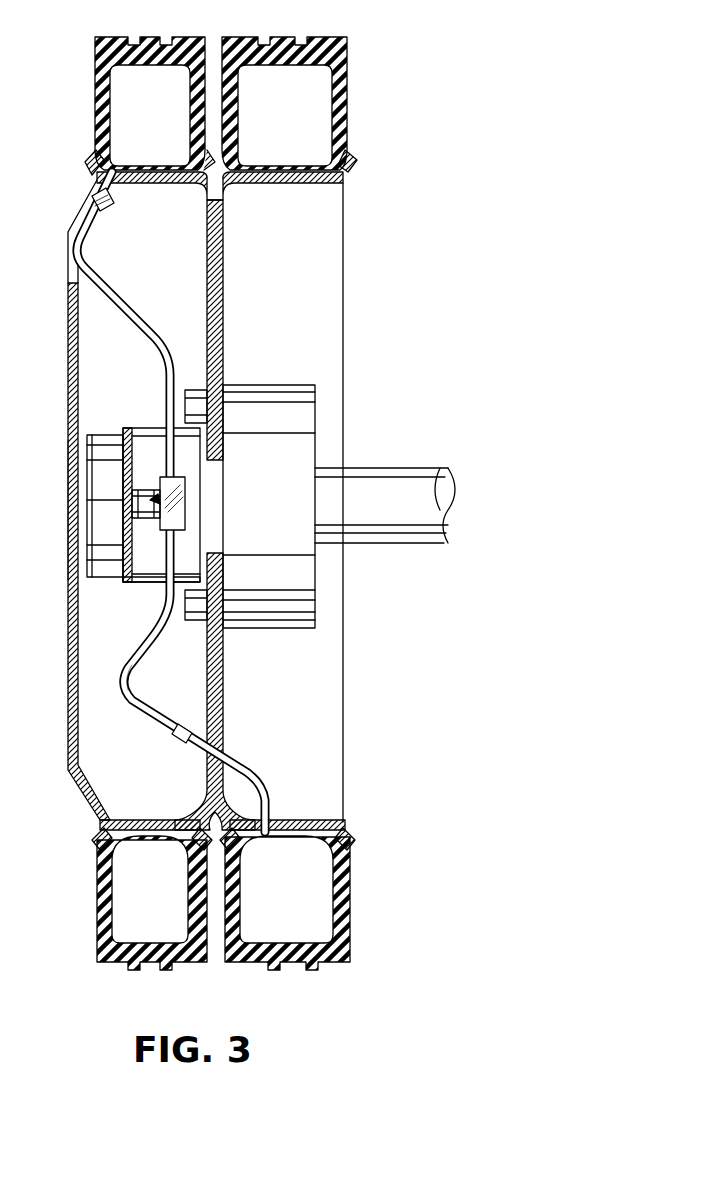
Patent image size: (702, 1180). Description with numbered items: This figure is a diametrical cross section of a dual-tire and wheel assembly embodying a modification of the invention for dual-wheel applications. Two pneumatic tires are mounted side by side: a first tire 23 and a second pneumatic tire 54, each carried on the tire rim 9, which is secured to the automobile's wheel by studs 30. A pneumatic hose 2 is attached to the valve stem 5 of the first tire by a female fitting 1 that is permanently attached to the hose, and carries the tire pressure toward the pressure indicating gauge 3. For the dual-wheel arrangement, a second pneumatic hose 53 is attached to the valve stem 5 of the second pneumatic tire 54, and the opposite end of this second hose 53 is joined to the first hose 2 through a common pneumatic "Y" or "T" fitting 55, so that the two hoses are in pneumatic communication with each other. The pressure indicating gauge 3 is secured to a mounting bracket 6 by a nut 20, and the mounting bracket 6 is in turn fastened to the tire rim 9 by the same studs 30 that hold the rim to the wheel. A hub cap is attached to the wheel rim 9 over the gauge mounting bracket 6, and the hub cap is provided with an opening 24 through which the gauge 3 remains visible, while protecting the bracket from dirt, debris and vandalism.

The female fitting 1 is at (92, 200).
The pneumatic hose 2 is at (140, 333).
The pressure indicating gauge 3 is at (100, 525).
The valve stem 5 is at (275, 770).
The mounting bracket 6 is at (125, 580).
The tire rim 9 is at (207, 250).
The nut 20 is at (140, 505).
The tire 23 is at (100, 37).
The opening 24 is at (72, 578).
The studs 30 is at (185, 410).
The second pneumatic hose 53 is at (128, 709).
The second pneumatic tire 54 is at (335, 37).
The "Y" or "T" fitting 55 is at (155, 498).